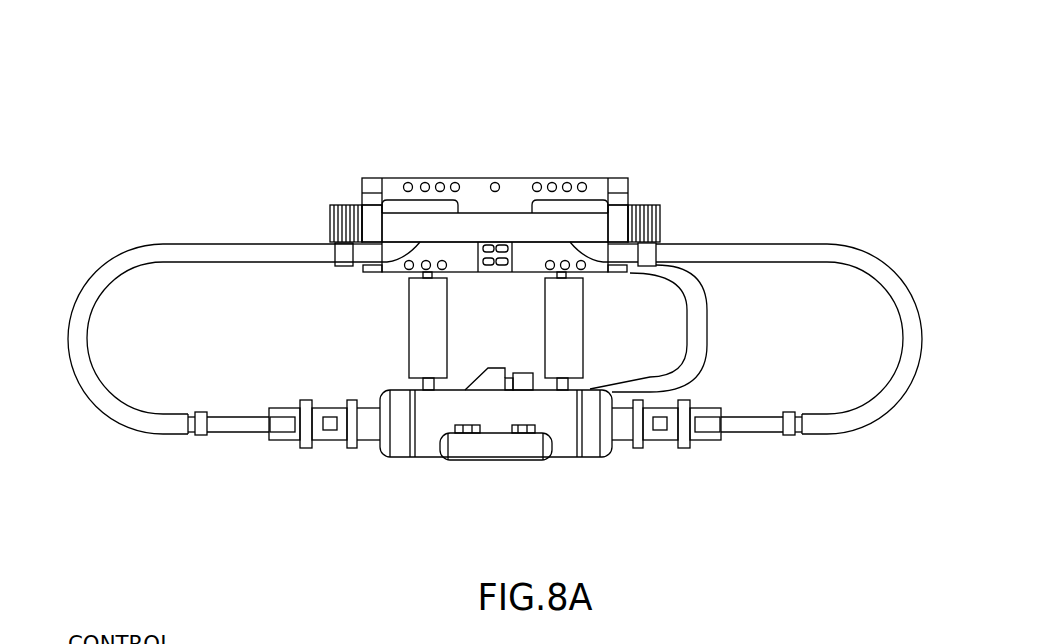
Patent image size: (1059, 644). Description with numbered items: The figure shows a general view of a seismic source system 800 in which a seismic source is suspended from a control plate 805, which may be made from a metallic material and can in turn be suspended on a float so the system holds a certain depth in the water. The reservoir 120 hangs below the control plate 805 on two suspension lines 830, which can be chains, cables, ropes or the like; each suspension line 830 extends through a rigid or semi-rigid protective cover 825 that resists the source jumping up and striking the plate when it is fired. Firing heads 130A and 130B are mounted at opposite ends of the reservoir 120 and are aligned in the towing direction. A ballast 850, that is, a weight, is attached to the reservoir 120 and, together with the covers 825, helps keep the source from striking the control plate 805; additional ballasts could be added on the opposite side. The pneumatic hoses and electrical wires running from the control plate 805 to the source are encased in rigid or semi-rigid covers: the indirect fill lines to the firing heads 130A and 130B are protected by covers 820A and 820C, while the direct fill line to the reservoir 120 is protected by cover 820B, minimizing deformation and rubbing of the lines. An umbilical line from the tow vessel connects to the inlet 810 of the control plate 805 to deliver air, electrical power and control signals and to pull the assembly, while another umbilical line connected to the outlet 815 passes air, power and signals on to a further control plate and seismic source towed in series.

The seismic source system 800 is at (806, 70).
The control plate 805 is at (600, 178).
The inlet 810 is at (316, 220).
The outlet 815 is at (692, 213).
The cover 820A is at (119, 254).
The cover 820B is at (700, 348).
The cover 820C is at (828, 243).
The protective cover 825 is at (409, 305).
The suspension line 830 is at (416, 386).
The reservoir 120 is at (400, 458).
The ballast 850 is at (540, 463).
The firing head 130A is at (291, 460).
The firing head 130B is at (735, 457).